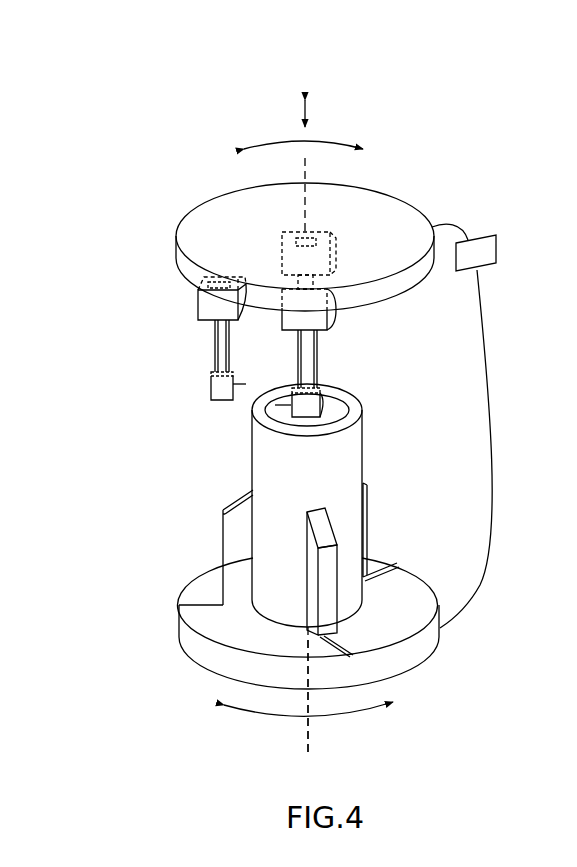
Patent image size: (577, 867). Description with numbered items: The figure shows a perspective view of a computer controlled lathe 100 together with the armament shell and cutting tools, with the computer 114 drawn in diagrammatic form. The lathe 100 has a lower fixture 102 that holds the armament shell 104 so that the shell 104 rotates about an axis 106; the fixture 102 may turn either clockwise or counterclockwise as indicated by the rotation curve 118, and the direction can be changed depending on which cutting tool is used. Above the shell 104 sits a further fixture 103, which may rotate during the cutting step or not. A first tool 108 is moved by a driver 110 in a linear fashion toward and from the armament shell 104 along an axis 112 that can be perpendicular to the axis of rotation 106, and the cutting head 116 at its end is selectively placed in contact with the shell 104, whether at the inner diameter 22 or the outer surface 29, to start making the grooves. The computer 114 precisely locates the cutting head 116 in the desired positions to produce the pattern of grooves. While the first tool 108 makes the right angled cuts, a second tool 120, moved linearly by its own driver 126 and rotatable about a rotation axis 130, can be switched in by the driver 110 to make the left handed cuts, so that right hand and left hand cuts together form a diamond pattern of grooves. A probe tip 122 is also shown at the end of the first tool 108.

The lathe 100 is at (457, 142).
The fixture 102 is at (381, 522).
The fixture 103 is at (402, 233).
The armament shell 104 is at (350, 463).
The axis 106 is at (307, 733).
The first tool 108 is at (323, 364).
The driver 110 is at (330, 325).
The axis 112 is at (305, 114).
The computer 114 is at (497, 251).
The cutting head 116 is at (278, 408).
The rotation curve 118 is at (372, 712).
The second tool 120 is at (197, 387).
The probe tip 122 is at (331, 395).
The driver 126 is at (199, 312).
The rotation axis 130 is at (303, 178).
The outer surface 29 is at (266, 465).
The inner diameter 22 is at (334, 412).